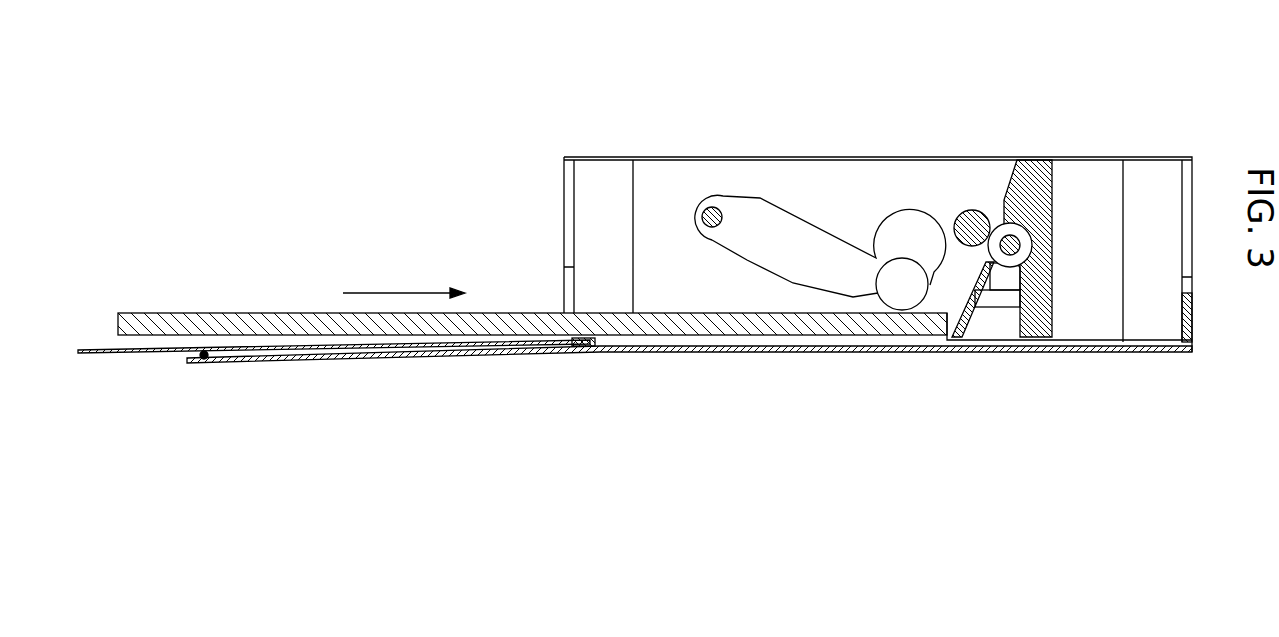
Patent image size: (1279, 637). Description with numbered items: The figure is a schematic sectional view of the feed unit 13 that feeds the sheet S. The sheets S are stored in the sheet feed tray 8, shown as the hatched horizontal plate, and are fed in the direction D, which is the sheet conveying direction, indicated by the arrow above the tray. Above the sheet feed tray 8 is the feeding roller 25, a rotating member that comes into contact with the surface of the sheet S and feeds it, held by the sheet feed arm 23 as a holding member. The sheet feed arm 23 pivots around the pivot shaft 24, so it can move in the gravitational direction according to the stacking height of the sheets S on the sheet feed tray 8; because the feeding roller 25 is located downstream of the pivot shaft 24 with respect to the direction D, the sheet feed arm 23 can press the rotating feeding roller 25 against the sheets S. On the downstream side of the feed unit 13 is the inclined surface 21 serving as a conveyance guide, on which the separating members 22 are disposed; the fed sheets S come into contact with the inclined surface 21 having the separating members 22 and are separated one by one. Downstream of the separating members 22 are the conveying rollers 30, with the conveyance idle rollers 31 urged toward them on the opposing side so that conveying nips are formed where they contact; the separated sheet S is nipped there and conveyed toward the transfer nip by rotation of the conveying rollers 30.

The feed unit 13 is at (780, 150).
The sheet S is at (270, 322).
The direction D is at (404, 280).
The sheet feed tray 8 is at (828, 353).
The inclined surface 21 is at (1033, 320).
The separating members 22 is at (972, 335).
The sheet feed arm 23 is at (752, 228).
The pivot shaft 24 is at (708, 208).
The feeding roller 25 is at (897, 278).
The conveying rollers 30 is at (1003, 235).
The conveyance idle rollers 31 is at (965, 215).